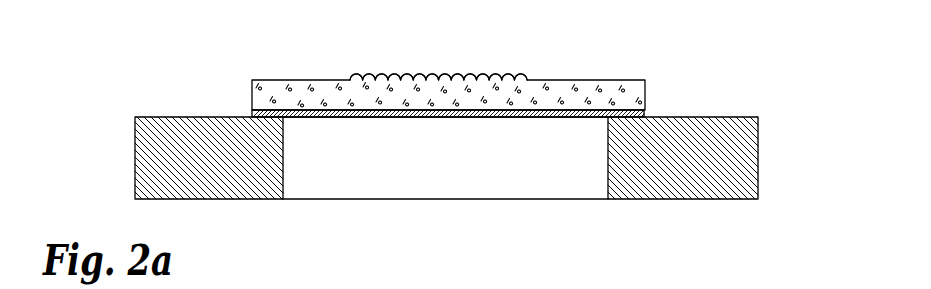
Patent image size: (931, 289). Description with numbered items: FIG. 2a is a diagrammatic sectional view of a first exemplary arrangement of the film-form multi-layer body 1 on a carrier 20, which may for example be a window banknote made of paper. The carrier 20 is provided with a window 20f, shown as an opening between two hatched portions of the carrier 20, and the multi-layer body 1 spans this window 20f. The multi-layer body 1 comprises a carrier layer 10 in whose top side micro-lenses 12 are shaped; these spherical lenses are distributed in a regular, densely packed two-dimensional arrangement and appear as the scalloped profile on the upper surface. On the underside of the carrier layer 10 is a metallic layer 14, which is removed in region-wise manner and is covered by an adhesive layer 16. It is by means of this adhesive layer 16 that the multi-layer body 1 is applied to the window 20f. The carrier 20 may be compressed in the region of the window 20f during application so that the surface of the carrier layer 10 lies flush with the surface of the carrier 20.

The multi-layer body 1 is at (529, 50).
The carrier layer 10 is at (646, 92).
The micro-lenses 12 is at (377, 75).
The metallic layer 14 is at (412, 117).
The adhesive layer 16 is at (643, 113).
The carrier 20 is at (737, 165).
The window 20f is at (549, 209).